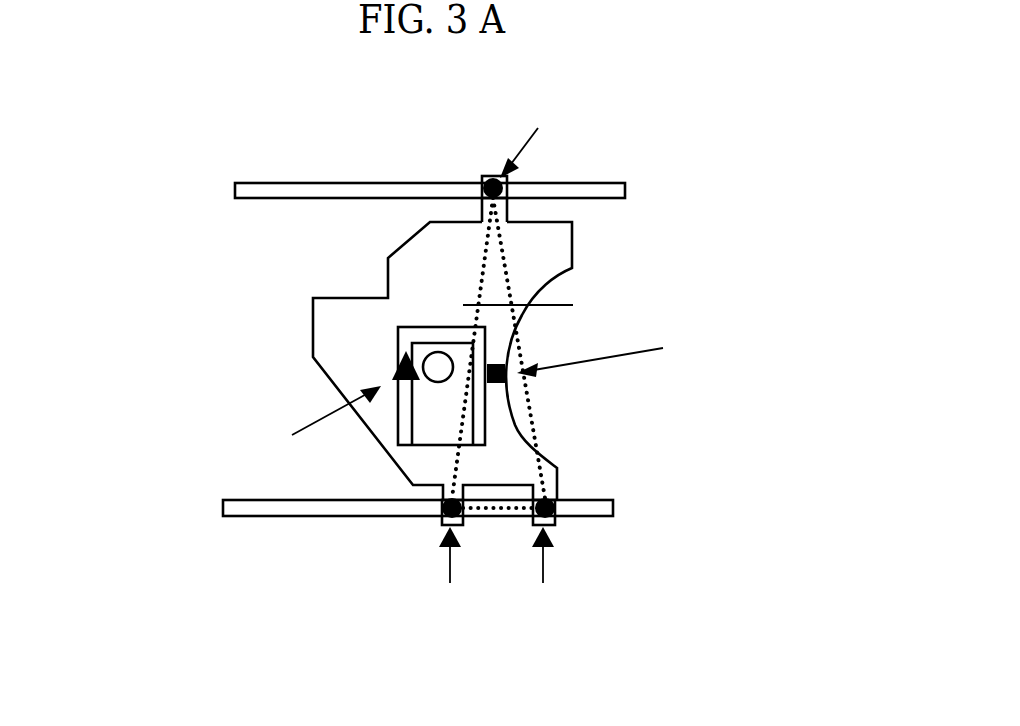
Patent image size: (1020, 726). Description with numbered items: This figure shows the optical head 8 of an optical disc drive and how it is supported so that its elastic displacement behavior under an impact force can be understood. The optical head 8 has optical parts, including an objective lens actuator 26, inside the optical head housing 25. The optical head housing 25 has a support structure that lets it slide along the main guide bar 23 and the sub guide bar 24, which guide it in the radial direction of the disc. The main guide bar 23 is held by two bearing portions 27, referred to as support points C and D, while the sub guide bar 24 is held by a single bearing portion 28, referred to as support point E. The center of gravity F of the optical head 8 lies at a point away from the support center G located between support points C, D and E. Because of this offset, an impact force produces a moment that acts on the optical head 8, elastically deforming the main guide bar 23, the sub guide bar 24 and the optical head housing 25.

The optical head 8 is at (274, 340).
The main guide bar 23 is at (248, 508).
The sub guide bar 24 is at (302, 193).
The optical head housing 25 is at (573, 305).
The objective lens actuator 26 is at (448, 392).
The bearing portions 27 is at (440, 510).
The bearing portion 28 is at (487, 178).